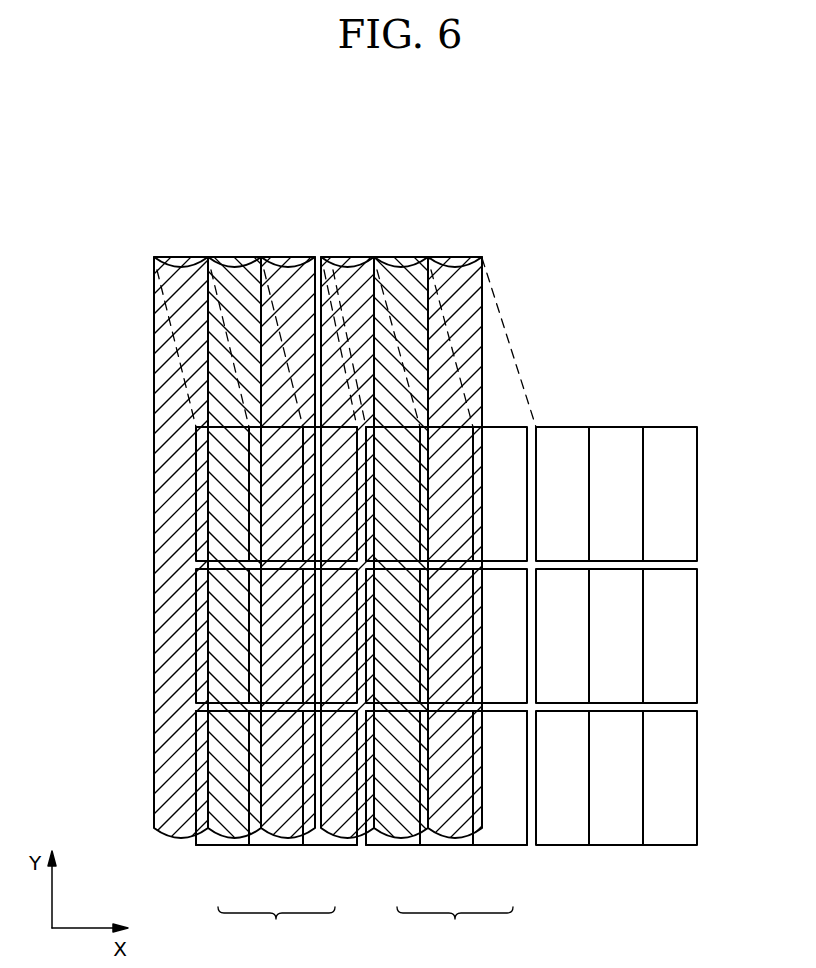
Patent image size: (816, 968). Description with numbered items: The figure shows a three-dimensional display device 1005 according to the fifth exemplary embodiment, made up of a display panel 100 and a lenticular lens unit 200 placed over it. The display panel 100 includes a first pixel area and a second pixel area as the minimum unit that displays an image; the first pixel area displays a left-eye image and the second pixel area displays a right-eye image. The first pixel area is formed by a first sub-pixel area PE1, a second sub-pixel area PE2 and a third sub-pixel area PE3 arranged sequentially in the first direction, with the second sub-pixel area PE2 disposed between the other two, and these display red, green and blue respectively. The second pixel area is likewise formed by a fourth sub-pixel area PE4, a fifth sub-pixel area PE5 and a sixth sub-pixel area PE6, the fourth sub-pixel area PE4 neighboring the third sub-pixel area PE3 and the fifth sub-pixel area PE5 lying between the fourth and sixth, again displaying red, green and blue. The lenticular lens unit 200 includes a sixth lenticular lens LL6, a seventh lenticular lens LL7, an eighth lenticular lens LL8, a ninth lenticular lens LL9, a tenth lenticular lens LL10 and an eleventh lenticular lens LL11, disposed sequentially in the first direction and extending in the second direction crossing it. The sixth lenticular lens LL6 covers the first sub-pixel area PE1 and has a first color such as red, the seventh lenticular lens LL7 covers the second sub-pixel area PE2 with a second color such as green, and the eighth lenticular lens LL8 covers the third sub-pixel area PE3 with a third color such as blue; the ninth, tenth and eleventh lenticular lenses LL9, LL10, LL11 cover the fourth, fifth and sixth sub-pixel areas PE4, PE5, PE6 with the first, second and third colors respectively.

The 3D display device 1005 is at (420, 106).
The lenticular lens unit 200 is at (465, 197).
The display panel 100 is at (707, 643).
The sixth lenticular lens LL6 is at (183, 257).
The seventh lenticular lens LL7 is at (235, 257).
The eighth lenticular lens LL8 is at (290, 257).
The ninth lenticular lens LL9 is at (352, 257).
The tenth lenticular lens LL10 is at (403, 257).
The eleventh lenticular lens LL11 is at (457, 257).
The first sub-pixel area PE1 is at (223, 848).
The second sub-pixel area PE2 is at (274, 848).
The third sub-pixel area PE3 is at (329, 848).
The fourth sub-pixel area PE4 is at (397, 848).
The fifth sub-pixel area PE5 is at (450, 848).
The sixth sub-pixel area PE6 is at (506, 848).